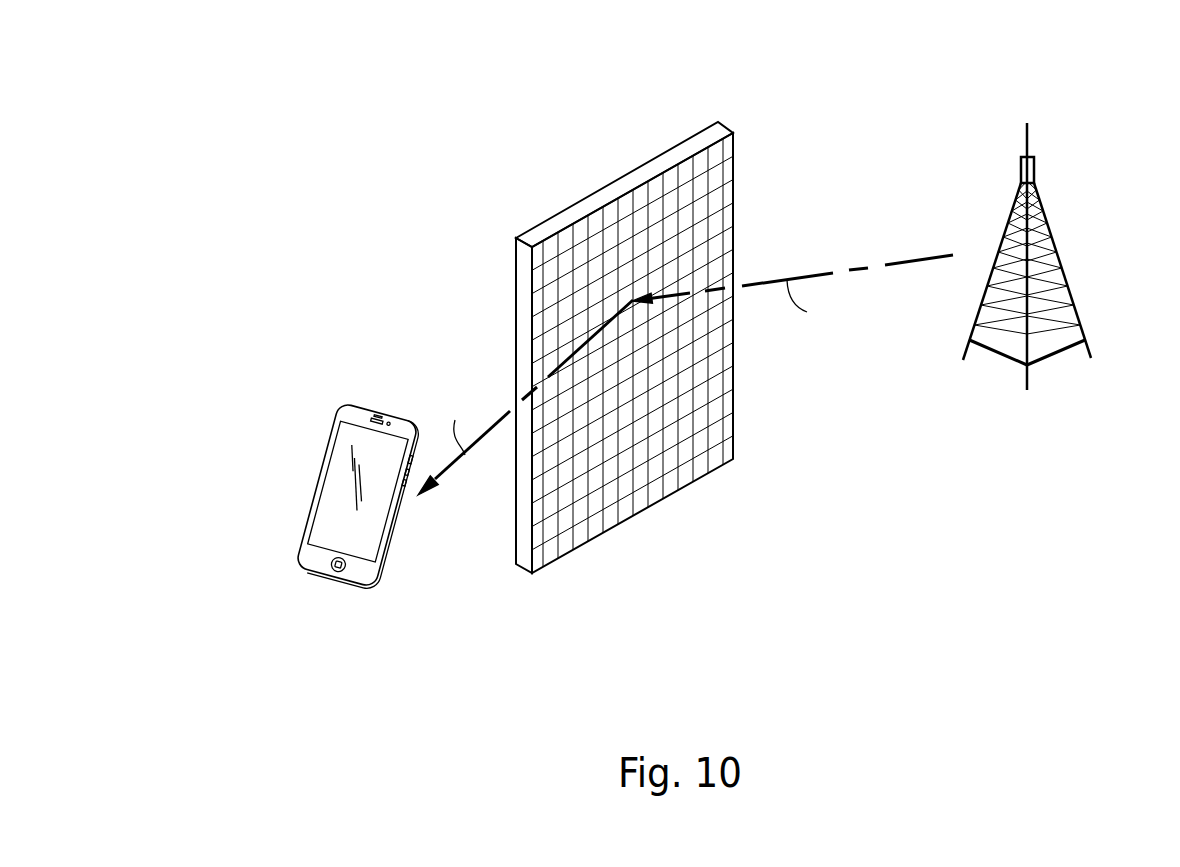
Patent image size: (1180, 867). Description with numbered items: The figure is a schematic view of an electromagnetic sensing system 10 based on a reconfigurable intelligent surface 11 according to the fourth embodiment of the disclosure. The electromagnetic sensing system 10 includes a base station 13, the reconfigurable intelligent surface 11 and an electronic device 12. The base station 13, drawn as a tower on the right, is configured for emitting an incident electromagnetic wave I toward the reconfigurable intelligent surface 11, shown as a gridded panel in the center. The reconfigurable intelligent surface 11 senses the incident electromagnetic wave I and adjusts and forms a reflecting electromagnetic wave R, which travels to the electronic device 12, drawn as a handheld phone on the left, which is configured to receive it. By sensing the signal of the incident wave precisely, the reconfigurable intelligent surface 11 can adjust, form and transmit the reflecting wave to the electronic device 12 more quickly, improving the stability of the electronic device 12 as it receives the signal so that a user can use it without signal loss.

The electromagnetic sensing system 10 is at (208, 77).
The reconfigurable intelligent surface 11 is at (605, 195).
The electronic device 12 is at (325, 508).
The base station 13 is at (1060, 270).